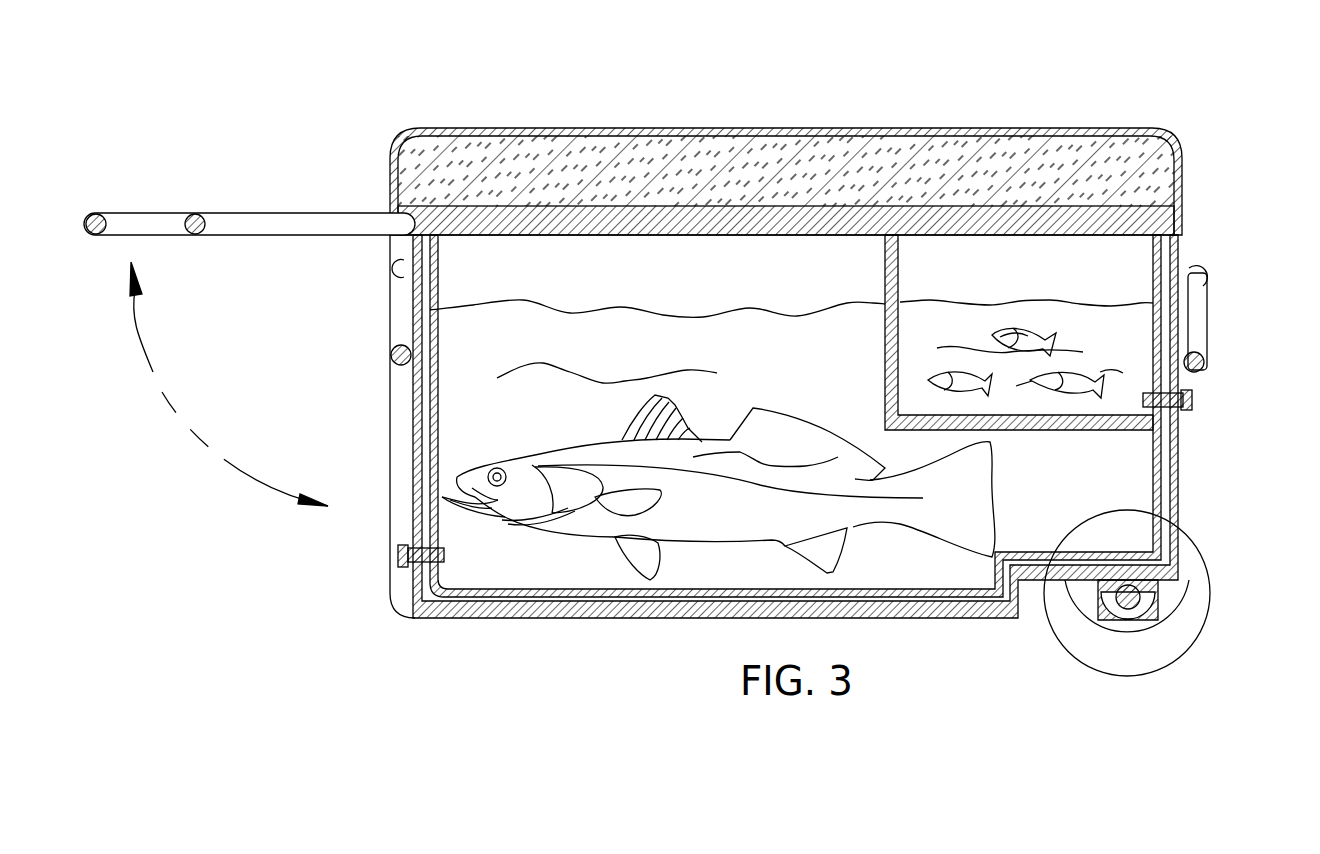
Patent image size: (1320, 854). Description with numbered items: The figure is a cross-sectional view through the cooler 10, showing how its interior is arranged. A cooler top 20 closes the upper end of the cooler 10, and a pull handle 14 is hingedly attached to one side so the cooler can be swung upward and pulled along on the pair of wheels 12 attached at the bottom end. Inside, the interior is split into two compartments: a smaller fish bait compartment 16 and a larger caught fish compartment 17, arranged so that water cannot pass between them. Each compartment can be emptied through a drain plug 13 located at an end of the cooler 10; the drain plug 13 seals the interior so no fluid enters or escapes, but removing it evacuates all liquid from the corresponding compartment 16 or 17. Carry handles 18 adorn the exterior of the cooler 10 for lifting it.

The cooler 10 is at (545, 620).
The wheels 12 is at (1125, 656).
The drain plug 13 is at (398, 552).
The pull handle 14 is at (258, 210).
The fish bait compartment 16 is at (1025, 270).
The caught fish compartment 17 is at (755, 360).
The carry handles 18 is at (1197, 322).
The cooler top 20 is at (608, 128).